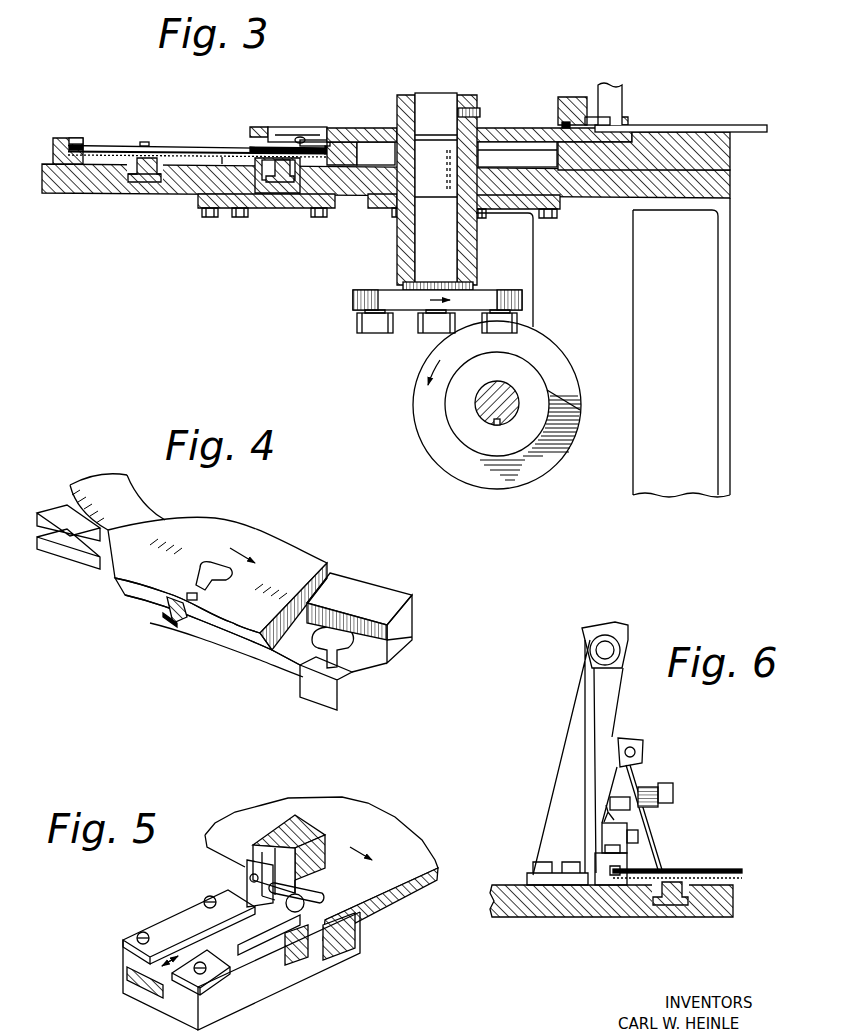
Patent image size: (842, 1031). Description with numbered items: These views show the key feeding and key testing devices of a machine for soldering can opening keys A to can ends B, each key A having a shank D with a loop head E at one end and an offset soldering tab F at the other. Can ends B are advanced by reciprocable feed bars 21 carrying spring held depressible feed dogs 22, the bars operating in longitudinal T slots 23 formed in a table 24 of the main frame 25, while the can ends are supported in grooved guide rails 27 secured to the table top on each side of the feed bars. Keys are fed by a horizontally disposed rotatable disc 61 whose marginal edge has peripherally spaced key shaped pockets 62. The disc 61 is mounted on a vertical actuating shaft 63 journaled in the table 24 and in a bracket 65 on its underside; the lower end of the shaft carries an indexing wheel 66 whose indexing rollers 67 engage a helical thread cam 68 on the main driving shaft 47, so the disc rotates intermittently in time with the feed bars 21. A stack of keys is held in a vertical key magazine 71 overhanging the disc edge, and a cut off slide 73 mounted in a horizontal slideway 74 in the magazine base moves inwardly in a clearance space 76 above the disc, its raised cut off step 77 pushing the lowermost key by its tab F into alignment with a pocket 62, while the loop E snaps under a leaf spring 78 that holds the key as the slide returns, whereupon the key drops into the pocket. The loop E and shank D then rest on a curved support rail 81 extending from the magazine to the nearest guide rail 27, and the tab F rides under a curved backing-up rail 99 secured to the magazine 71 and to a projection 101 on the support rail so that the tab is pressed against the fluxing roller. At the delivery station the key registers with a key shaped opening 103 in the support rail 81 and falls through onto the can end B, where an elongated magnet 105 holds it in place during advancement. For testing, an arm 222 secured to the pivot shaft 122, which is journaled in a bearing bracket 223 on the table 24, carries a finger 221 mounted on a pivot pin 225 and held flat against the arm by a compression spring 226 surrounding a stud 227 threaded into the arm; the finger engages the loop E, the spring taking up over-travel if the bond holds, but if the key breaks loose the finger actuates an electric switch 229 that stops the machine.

In FIG. 3, the feed bars 21 is at (143, 182).
In FIG. 6, the feed bars 21 is at (673, 906).
In FIG. 3, the feed dogs 22 is at (146, 142).
In FIG. 3, the T slots 23 is at (152, 183).
In FIG. 3, the table 24 is at (97, 178).
In FIG. 6, the table 24 is at (572, 903).
In FIG. 3, the frame 25 is at (724, 290).
In FIG. 3, the guide rails 27 is at (61, 137).
In FIG. 4, the guide rails 27 is at (380, 593).
In FIG. 3, the main driving shaft 47 is at (499, 407).
In FIG. 3, the rotatable disc 61 is at (506, 128).
In FIG. 4, the rotatable disc 61 is at (284, 556).
In FIG. 5, the rotatable disc 61 is at (398, 830).
In FIG. 3, the key shaped pockets 62 is at (301, 125).
In FIG. 4, the key shaped pockets 62 is at (238, 578).
In FIG. 5, the key shaped pockets 62 is at (330, 893).
In FIG. 3, the actuating shaft 63 is at (430, 240).
In FIG. 3, the bracket 65 is at (468, 253).
In FIG. 3, the indexing wheel 66 is at (362, 297).
In FIG. 3, the indexing rollers 67 is at (368, 325).
In FIG. 3, the helical thread cam 68 is at (430, 406).
In FIG. 3, the key magazine 71 is at (567, 99).
In FIG. 5, the key magazine 71 is at (297, 833).
In FIG. 3, the cut off slide 73 is at (748, 125).
In FIG. 5, the cut off slide 73 is at (153, 977).
In FIG. 3, the slideway 74 is at (707, 136).
In FIG. 5, the slideway 74 is at (238, 958).
In FIG. 3, the clearance space 76 is at (564, 125).
In FIG. 3, the raised cut off step 77 is at (645, 125).
In FIG. 5, the raised cut off step 77 is at (244, 948).
In FIG. 3, the leaf spring 78 is at (579, 123).
In FIG. 5, the leaf spring 78 is at (308, 879).
In FIG. 3, the support rail 81 is at (315, 142).
In FIG. 4, the support rail 81 is at (277, 648).
In FIG. 5, the support rail 81 is at (358, 936).
In FIG. 3, the backing-up rail 99 is at (260, 127).
In FIG. 4, the backing-up rail 99 is at (160, 598).
In FIG. 5, the backing-up rail 99 is at (303, 945).
In FIG. 4, the projection 101 is at (318, 690).
In FIG. 4, the key shaped opening 103 is at (350, 652).
In FIG. 3, the magnet 105 is at (262, 192).
In FIG. 6, the pivot shaft 122 is at (598, 652).
In FIG. 6, the finger 221 is at (650, 838).
In FIG. 6, the arm 222 is at (617, 723).
In FIG. 6, the bearing bracket 223 is at (567, 760).
In FIG. 6, the pivot pin 225 is at (643, 749).
In FIG. 6, the compression spring 226 is at (650, 788).
In FIG. 6, the stud 227 is at (673, 794).
In FIG. 6, the electric switch 229 is at (612, 836).
In FIG. 3, the can opening key A is at (298, 137).
In FIG. 4, the can opening key A is at (190, 617).
In FIG. 5, the can opening key A is at (257, 897).
In FIG. 6, the can opening key A is at (685, 871).
In FIG. 3, the can end B is at (193, 146).
In FIG. 6, the can end B is at (745, 874).
In FIG. 5, the shank D is at (262, 900).
In FIG. 4, the loop head E is at (207, 568).
In FIG. 5, the loop head E is at (310, 907).
In FIG. 6, the loop head E is at (668, 871).
In FIG. 4, the soldering tab F is at (170, 625).
In FIG. 5, the soldering tab F is at (246, 916).
In FIG. 6, the soldering tab F is at (710, 870).